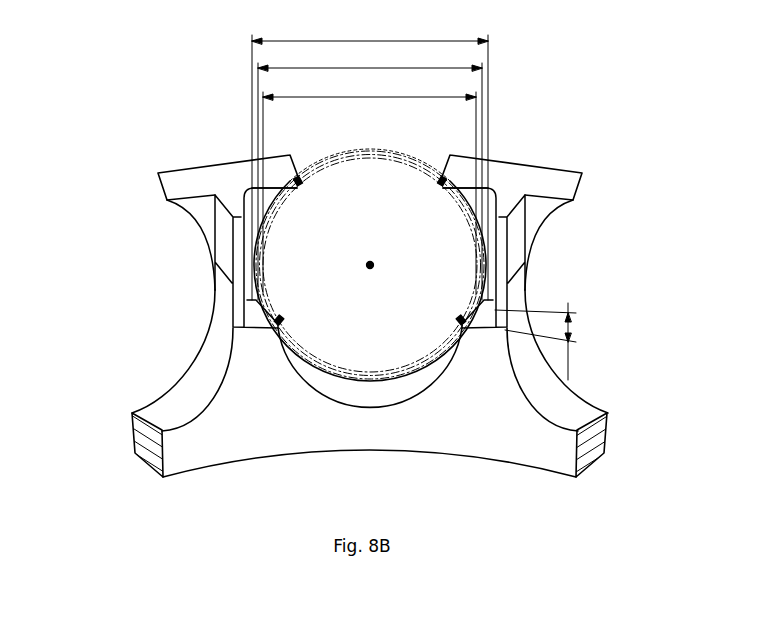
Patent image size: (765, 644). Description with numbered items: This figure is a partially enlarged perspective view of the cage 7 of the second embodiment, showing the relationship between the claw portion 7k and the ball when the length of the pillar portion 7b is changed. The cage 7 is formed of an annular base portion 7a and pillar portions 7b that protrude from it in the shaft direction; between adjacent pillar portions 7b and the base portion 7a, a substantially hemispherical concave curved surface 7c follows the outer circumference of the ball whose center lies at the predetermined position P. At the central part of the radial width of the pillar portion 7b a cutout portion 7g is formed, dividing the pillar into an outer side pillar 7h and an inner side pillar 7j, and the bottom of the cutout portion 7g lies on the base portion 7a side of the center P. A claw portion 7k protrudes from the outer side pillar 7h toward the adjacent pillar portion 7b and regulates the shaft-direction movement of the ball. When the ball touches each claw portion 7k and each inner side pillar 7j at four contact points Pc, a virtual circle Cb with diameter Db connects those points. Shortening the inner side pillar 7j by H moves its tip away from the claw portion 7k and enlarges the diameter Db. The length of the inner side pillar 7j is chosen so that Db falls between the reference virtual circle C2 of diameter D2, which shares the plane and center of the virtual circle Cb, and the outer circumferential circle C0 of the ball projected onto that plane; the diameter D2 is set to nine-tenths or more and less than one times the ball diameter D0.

The cage 7 is at (93, 42).
The claw portion 7k is at (162, 173).
The pillar portion 7b is at (160, 233).
The outer side pillar 7h is at (230, 205).
The inner side pillar 7j is at (213, 290).
The cutout portion 7g is at (257, 252).
The concave curved surface 7c is at (185, 385).
The base portion 7a is at (211, 466).
The contact point Pc is at (304, 187).
The center of the ball P is at (372, 270).
The virtual circle Cb is at (287, 376).
The outer circumferential circle of the ball C0 is at (352, 385).
The reference virtual circle C2 is at (418, 375).
The diameter of the ball D0 is at (370, 158).
The diameter of the virtual circle Db is at (370, 173).
The diameter of the reference virtual circle D2 is at (369, 184).
The reduction in length of the inner side pillar H is at (542, 341).